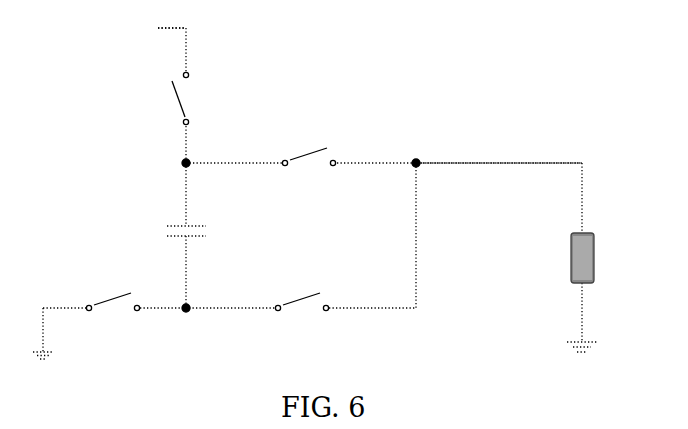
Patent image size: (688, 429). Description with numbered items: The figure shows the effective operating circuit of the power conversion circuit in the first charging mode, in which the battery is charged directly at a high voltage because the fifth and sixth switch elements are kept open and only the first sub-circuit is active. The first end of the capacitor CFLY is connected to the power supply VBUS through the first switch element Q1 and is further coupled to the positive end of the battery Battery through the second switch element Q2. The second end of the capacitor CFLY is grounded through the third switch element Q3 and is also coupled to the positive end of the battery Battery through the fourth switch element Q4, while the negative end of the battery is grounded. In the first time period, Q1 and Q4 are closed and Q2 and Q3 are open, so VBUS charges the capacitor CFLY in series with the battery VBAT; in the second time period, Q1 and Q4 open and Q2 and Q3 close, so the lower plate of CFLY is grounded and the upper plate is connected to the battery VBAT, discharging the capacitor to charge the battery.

The power supply VBUS is at (146, 34).
The first switch element Q1 is at (164, 98).
The second switch element Q2 is at (308, 176).
The third switch element Q3 is at (112, 320).
The fourth switch element Q4 is at (301, 320).
The capacitor CFLY is at (210, 237).
The battery VBAT is at (499, 149).
The battery element Battery is at (540, 258).